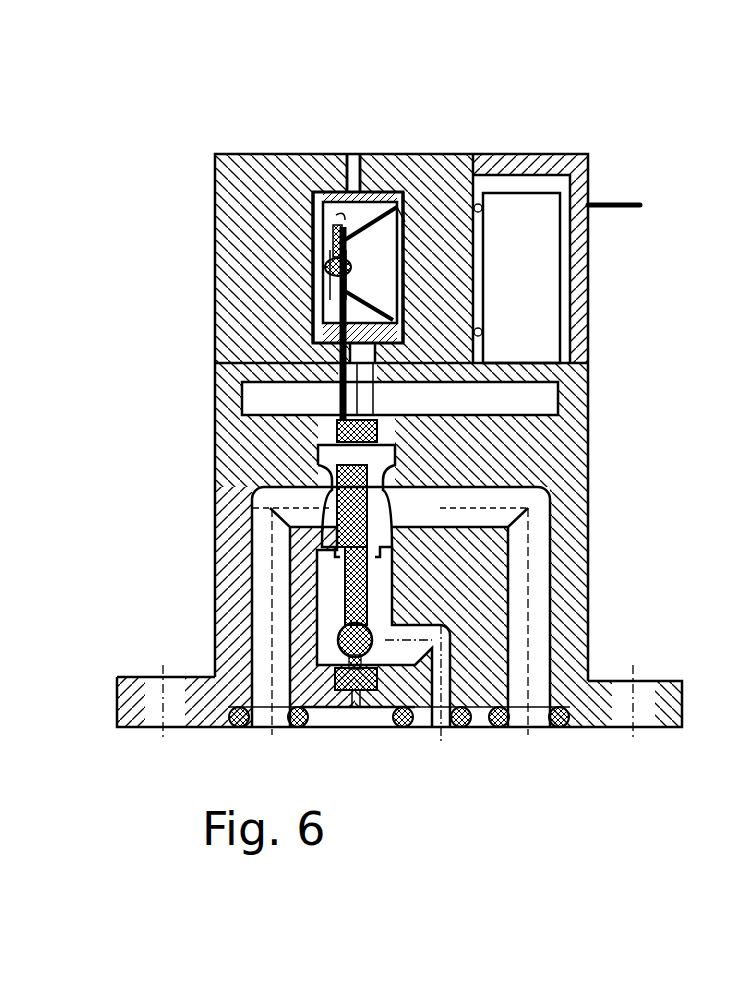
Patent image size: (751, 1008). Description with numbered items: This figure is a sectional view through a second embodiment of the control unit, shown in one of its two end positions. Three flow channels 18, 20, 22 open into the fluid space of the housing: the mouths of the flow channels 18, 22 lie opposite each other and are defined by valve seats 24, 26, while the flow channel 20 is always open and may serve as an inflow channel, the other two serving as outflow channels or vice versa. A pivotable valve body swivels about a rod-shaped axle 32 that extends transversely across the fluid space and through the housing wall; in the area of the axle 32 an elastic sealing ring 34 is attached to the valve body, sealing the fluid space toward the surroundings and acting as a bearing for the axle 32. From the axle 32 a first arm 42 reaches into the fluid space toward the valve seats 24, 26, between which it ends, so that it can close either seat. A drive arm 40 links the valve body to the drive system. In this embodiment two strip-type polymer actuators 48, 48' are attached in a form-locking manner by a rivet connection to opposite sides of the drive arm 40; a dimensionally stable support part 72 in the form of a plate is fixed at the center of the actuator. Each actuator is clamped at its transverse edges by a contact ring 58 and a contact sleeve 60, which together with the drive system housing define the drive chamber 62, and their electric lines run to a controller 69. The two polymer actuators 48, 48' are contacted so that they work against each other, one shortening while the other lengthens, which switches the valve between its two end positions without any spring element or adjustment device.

The flow channel 18 is at (257, 594).
The flow channel 20 is at (442, 745).
The flow channel 22 is at (537, 622).
The valve seat 24 is at (338, 475).
The valve seat 26 is at (372, 478).
The rod-shaped axle 32 is at (340, 648).
The sealing ring 34 is at (357, 692).
The drive arm 40 is at (245, 395).
The first arm 42 is at (335, 507).
The polymer actuator 48 is at (243, 233).
The polymer actuator 48' is at (471, 175).
The contact ring 58 is at (310, 188).
The contact sleeve 60 is at (352, 183).
The drive chamber 62 is at (397, 193).
The controller 69 is at (553, 275).
The support part 72 is at (326, 298).